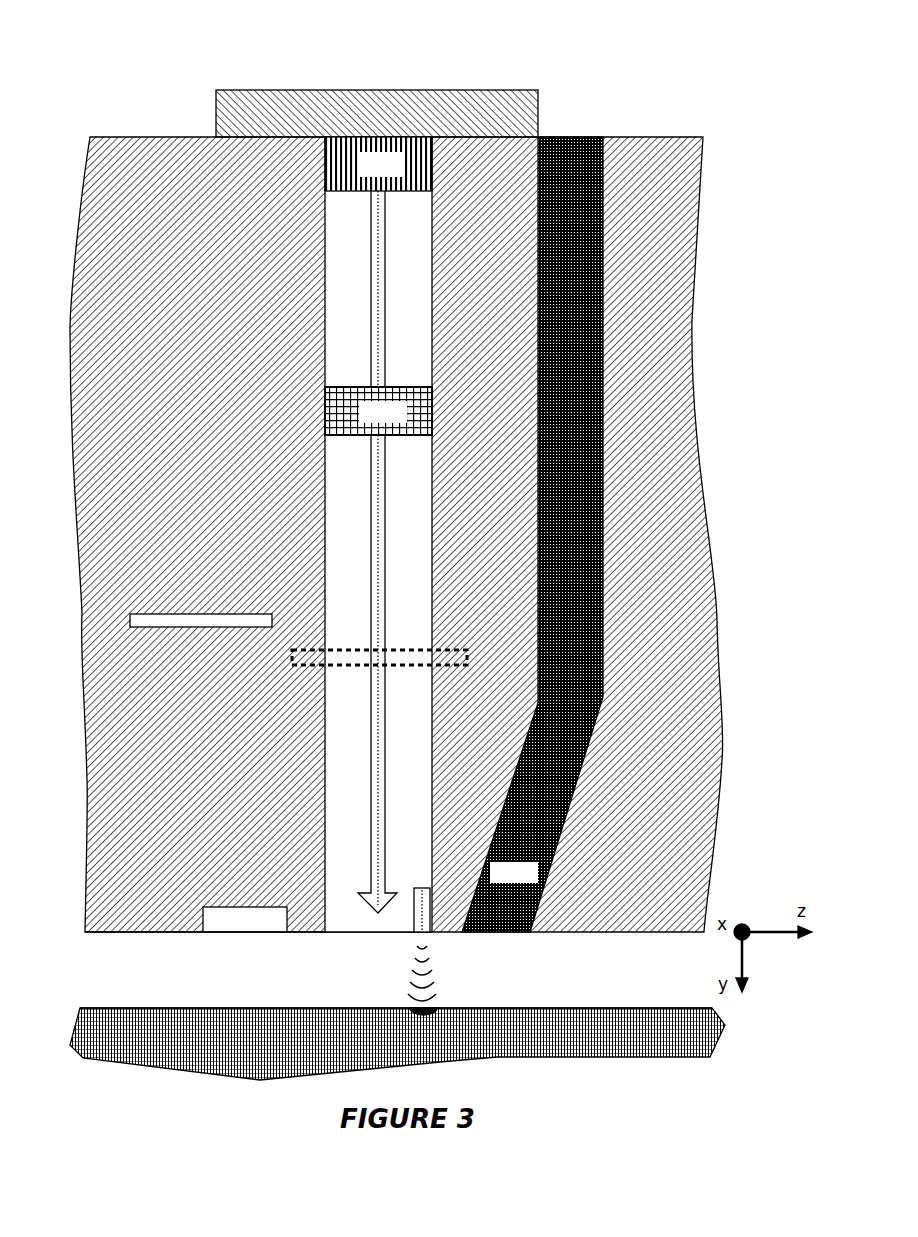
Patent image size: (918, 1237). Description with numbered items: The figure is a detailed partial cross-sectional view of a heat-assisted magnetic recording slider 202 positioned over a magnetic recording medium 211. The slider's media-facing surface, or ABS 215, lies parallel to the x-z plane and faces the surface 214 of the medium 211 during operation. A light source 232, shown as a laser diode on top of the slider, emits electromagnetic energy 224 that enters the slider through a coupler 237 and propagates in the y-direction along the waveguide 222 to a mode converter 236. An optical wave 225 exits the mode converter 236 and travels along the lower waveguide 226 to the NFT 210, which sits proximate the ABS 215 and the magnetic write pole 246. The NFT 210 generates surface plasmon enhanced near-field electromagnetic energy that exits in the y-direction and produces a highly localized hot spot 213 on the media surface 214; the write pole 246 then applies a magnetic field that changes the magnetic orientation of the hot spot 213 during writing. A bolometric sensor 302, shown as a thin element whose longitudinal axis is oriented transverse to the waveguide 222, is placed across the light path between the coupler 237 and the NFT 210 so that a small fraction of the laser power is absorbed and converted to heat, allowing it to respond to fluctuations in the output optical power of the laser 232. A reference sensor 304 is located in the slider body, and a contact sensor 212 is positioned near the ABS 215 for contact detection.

The HAMR slider 202 is at (684, 110).
The light source 232 is at (236, 89).
The coupler 237 is at (378, 164).
The mode converter 236 is at (378, 411).
The waveguide 222 is at (428, 566).
The electromagnetic energy 224 is at (372, 551).
The optical wave 225 is at (371, 833).
The waveguide 226 is at (427, 841).
The magnetic write pole 246 is at (532, 534).
The reference sensor 304 is at (160, 613).
The bolometric sensor 302 is at (452, 650).
The contact sensor 212 is at (233, 906).
The NFT 210 is at (427, 936).
The ABS 215 is at (145, 935).
The surface 214 is at (655, 1008).
The hot spot 213 is at (430, 1015).
The magnetic recording medium 211 is at (668, 1046).